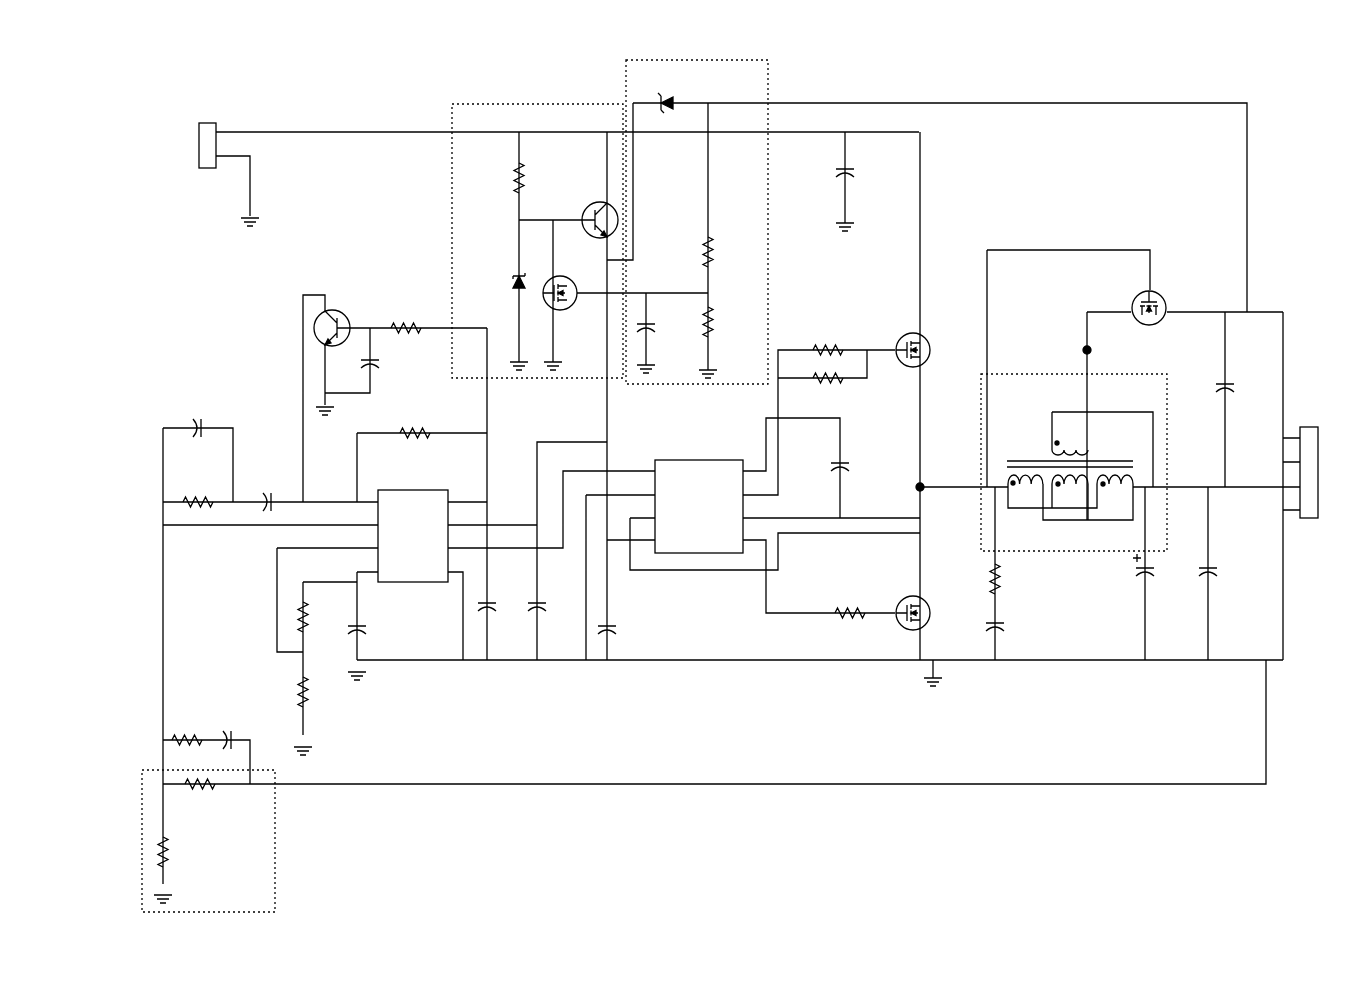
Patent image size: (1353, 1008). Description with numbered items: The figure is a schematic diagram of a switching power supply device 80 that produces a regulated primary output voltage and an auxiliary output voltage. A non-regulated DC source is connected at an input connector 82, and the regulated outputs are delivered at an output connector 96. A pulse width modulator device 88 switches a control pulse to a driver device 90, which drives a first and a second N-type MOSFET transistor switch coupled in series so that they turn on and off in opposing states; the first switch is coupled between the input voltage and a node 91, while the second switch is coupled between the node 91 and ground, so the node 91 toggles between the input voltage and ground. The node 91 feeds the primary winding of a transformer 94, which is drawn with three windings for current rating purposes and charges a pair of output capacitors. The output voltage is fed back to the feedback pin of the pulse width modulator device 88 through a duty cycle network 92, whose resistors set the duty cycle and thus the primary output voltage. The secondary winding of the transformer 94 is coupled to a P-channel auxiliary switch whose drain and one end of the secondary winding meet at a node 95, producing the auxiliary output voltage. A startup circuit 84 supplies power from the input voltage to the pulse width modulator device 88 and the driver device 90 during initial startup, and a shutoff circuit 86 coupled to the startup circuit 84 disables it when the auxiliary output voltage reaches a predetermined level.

The switching power supply device 80 is at (1200, 85).
The input connector 82 is at (199, 133).
The startup circuit 84 is at (480, 103).
The shutoff circuit 86 is at (770, 82).
The pulse width modulator device 88 is at (410, 490).
The driver device 90 is at (687, 460).
The node 91 is at (915, 480).
The duty cycle network 92 is at (277, 848).
The transformer 94 is at (1127, 374).
The node 95 is at (1080, 335).
The output connector 96 is at (1304, 425).